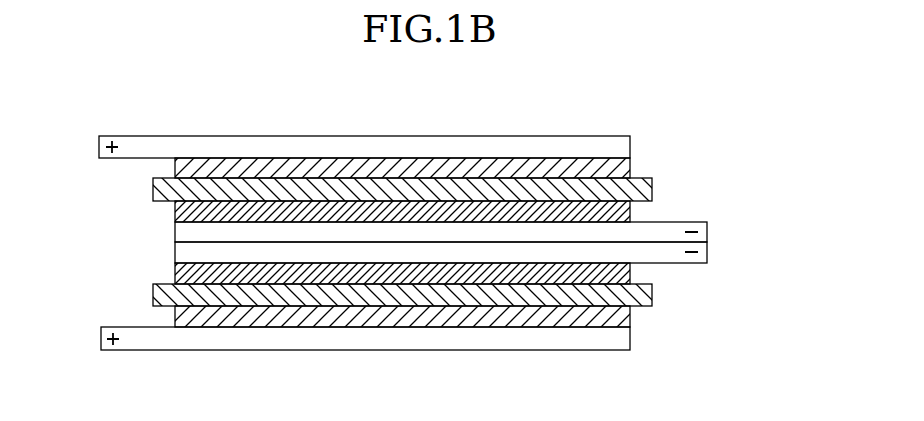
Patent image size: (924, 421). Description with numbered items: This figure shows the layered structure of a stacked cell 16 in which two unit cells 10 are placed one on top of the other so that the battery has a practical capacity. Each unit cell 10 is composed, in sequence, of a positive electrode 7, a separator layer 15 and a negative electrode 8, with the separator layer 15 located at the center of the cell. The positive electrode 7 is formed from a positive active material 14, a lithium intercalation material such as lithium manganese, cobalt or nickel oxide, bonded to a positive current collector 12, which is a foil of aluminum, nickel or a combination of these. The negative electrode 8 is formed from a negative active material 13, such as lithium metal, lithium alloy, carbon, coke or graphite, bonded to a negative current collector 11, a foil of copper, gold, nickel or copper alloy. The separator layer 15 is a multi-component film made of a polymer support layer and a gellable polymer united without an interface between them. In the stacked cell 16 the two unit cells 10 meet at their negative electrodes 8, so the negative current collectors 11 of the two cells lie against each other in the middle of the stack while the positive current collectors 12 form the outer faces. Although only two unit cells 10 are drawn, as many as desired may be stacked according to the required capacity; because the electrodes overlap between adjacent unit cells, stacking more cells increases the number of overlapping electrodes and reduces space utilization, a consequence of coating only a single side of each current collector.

The positive electrode 7 is at (693, 90).
The negative electrode 8 is at (764, 188).
The unit cell 10 is at (84, 350).
The negative current collector 11 is at (700, 235).
The positive current collector 12 is at (623, 143).
The negative active material 13 is at (632, 208).
The positive active material 14 is at (625, 168).
The separator layer 15 is at (153, 189).
The stacked cell 16 is at (753, 157).